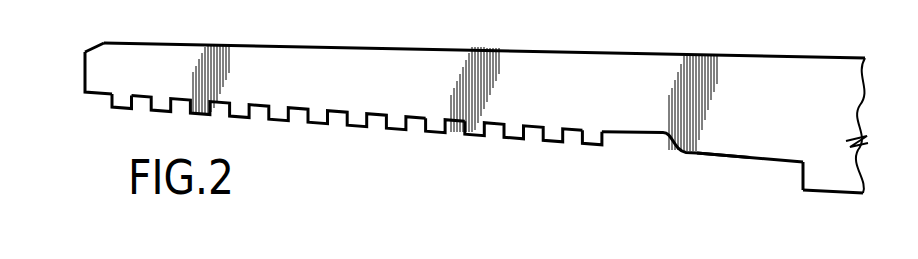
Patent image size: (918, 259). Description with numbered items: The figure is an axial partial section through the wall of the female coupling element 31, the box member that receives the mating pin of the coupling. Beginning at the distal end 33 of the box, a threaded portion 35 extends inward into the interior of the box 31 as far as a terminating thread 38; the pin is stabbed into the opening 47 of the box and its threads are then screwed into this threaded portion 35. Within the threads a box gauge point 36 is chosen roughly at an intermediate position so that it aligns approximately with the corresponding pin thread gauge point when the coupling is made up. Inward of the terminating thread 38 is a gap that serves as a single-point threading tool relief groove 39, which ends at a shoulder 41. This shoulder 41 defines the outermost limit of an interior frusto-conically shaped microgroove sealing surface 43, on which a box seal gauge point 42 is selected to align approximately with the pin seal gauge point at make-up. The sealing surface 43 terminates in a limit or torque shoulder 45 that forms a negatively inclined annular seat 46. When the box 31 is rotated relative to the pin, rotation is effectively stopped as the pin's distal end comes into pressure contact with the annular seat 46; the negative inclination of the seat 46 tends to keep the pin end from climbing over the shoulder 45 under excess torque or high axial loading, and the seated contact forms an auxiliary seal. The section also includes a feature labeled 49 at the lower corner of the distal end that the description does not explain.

The female coupling element 31 is at (425, 89).
The distal end 33 is at (84, 60).
The threaded portion 35 is at (314, 123).
The box gauge point 36 is at (435, 140).
The terminating thread 38 is at (582, 144).
The single-point threading tool relief groove 39 is at (632, 133).
The shoulder 41 is at (666, 144).
The box seal gauge point 42 is at (690, 166).
The microgroove sealing surface 43 is at (712, 160).
The torque shoulder 45 is at (833, 194).
The annular seat 46 is at (800, 172).
The opening 47 is at (100, 101).
The leading edge 49 is at (84, 92).